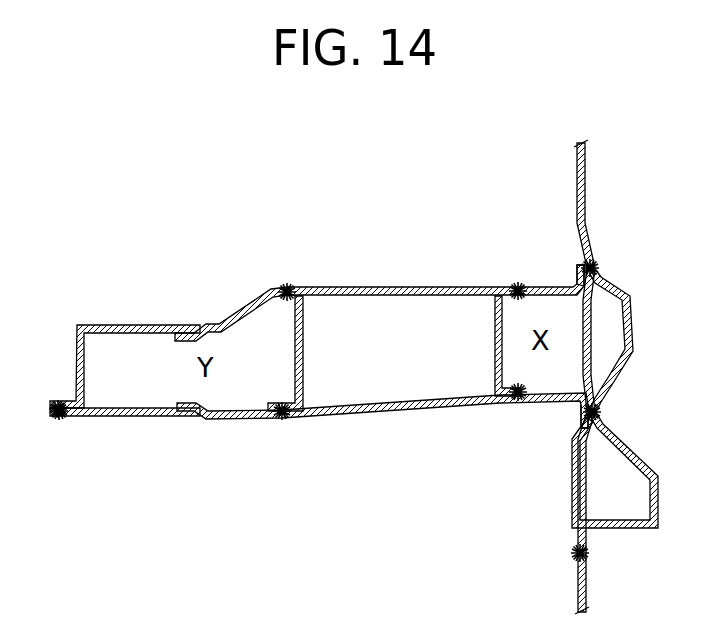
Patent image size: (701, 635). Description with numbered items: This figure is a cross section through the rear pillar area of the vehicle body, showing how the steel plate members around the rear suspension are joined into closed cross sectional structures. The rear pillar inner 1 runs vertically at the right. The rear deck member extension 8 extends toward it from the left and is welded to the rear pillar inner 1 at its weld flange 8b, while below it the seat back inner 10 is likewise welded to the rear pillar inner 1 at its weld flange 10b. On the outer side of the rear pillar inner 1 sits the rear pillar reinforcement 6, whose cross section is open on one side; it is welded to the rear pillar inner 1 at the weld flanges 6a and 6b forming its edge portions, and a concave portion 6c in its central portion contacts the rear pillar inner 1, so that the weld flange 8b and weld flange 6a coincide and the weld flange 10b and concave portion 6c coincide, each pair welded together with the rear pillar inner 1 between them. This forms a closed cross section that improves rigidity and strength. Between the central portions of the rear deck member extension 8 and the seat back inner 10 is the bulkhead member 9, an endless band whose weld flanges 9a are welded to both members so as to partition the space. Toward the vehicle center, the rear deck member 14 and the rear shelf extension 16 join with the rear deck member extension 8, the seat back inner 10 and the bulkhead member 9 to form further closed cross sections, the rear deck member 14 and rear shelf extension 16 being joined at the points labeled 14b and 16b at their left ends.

The rear pillar inner 1 is at (588, 189).
The rear pillar reinforcement 6 is at (632, 327).
The weld flange 6a is at (598, 263).
The weld flange 6b is at (590, 562).
The concave portion 6c is at (603, 404).
The rear deck member extension 8 is at (394, 287).
The weld flange 8b is at (578, 262).
The bulkhead member 9 is at (304, 341).
The weld flanges 9a is at (285, 288).
The seat back inner 10 is at (403, 407).
The weld flange 10b is at (577, 432).
The rear deck member 14 is at (143, 323).
The weld flange 14b is at (54, 400).
The rear shelf extension 16 is at (151, 418).
The weld flange 16b is at (51, 420).